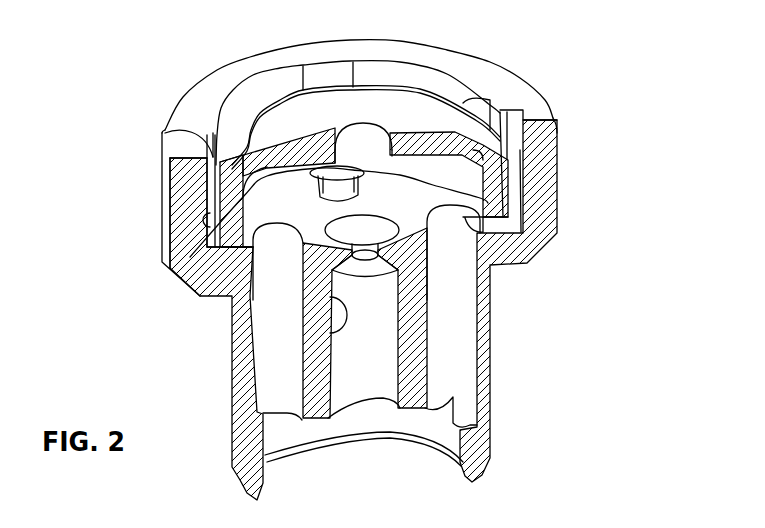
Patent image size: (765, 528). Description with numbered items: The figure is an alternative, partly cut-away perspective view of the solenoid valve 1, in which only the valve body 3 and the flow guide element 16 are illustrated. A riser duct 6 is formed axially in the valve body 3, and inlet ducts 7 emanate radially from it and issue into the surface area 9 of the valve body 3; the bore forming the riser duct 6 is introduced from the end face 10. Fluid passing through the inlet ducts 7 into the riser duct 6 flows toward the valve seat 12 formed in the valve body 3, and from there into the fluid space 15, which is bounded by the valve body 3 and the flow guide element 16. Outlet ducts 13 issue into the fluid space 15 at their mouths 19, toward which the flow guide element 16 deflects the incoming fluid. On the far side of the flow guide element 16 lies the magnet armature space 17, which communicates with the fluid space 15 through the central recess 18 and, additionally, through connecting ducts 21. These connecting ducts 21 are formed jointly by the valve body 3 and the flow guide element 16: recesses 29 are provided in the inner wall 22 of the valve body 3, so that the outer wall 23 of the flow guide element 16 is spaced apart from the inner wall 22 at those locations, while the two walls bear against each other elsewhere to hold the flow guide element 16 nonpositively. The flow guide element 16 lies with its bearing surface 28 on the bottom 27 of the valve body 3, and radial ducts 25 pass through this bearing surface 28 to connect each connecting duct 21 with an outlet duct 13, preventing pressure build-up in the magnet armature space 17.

The solenoid valve 1 is at (563, 107).
The valve body 3 is at (540, 167).
The riser duct 6 is at (387, 327).
The inlet duct 7 is at (332, 312).
The surface area 9 is at (490, 404).
The end face 10 is at (470, 480).
The valve seat 12 is at (375, 240).
The outlet duct 13 is at (343, 172).
The fluid space 15 is at (412, 206).
The flow guide element 16 is at (243, 128).
The magnet armature space 17 is at (440, 88).
The central recess 18 is at (375, 138).
The mouth 19 is at (297, 180).
The connecting duct 21 is at (313, 73).
The inner wall 22 is at (225, 223).
The outer wall 23 is at (518, 183).
The radial duct 25 is at (362, 172).
The bottom 27 is at (258, 211).
The bearing surface 28 is at (450, 177).
The recess 29 is at (333, 73).